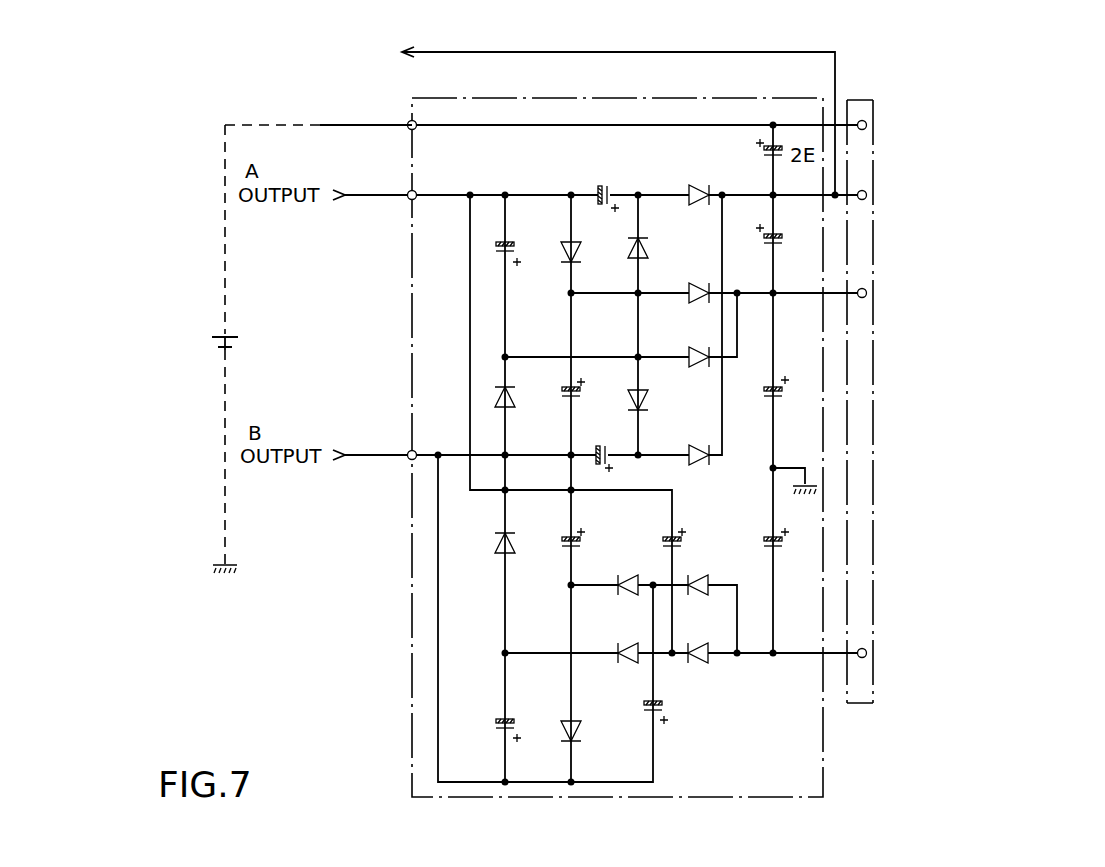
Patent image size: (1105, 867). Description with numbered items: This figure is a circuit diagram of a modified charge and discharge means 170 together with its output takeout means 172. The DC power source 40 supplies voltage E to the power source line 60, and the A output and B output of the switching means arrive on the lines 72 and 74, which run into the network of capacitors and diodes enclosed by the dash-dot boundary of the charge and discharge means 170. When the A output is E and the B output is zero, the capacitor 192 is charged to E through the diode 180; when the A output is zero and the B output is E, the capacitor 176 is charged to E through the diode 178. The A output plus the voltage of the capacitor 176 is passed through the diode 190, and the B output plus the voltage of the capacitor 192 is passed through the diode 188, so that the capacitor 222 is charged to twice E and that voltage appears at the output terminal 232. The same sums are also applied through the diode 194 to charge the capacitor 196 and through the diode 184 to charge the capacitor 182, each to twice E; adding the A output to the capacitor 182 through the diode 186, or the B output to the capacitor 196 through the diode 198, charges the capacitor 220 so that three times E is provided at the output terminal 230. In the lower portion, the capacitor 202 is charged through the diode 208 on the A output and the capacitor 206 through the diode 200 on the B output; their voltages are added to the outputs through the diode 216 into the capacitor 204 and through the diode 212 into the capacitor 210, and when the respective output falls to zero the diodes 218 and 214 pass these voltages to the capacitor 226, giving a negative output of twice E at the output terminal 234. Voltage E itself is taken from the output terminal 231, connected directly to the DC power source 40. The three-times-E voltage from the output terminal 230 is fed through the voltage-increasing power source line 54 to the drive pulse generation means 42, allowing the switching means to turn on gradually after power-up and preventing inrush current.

The DC power source 40 is at (232, 334).
The drive pulse generation means 42 is at (232, 63).
The voltage-increasing power source line 54 is at (436, 52).
The power source line 60 is at (541, 92).
The line for A output 72 is at (374, 194).
The line for B output 74 is at (374, 455).
The charge and discharge means 170 is at (410, 660).
The output takeout means 172 is at (862, 98).
The capacitor 176 is at (500, 252).
The diode 178 is at (494, 403).
The diode 180 is at (564, 258).
The capacitor 182 is at (610, 188).
The diode 184 is at (652, 252).
The diode 186 is at (702, 185).
The diode 188 is at (690, 297).
The diode 190 is at (703, 367).
The capacitor 192 is at (563, 390).
The diode 194 is at (650, 405).
The capacitor 196 is at (594, 463).
The diode 198 is at (700, 466).
The diode 200 is at (497, 552).
The capacitor 202 is at (570, 554).
The capacitor 204 is at (668, 536).
The capacitor 206 is at (501, 720).
The diode 208 is at (569, 720).
The capacitor 210 is at (650, 713).
The diode 212 is at (632, 597).
The diode 214 is at (702, 597).
The diode 216 is at (630, 665).
The diode 218 is at (703, 663).
The capacitor 220 is at (782, 247).
The capacitor 222 is at (778, 386).
The capacitor 226 is at (770, 553).
The output terminal 230 is at (867, 200).
The output terminal 231 is at (880, 124).
The output terminal 232 is at (867, 298).
The output terminal 234 is at (867, 648).